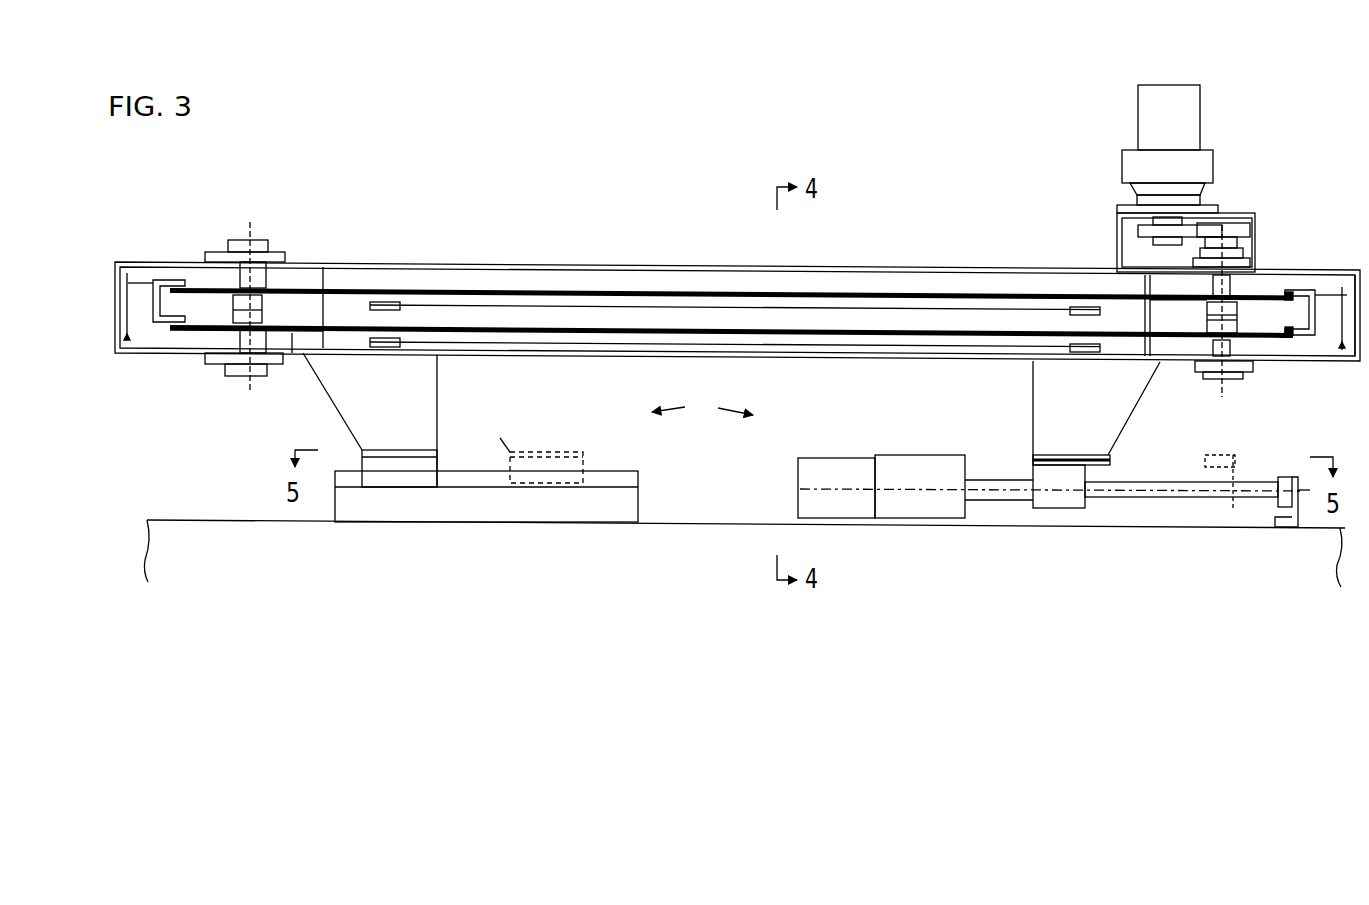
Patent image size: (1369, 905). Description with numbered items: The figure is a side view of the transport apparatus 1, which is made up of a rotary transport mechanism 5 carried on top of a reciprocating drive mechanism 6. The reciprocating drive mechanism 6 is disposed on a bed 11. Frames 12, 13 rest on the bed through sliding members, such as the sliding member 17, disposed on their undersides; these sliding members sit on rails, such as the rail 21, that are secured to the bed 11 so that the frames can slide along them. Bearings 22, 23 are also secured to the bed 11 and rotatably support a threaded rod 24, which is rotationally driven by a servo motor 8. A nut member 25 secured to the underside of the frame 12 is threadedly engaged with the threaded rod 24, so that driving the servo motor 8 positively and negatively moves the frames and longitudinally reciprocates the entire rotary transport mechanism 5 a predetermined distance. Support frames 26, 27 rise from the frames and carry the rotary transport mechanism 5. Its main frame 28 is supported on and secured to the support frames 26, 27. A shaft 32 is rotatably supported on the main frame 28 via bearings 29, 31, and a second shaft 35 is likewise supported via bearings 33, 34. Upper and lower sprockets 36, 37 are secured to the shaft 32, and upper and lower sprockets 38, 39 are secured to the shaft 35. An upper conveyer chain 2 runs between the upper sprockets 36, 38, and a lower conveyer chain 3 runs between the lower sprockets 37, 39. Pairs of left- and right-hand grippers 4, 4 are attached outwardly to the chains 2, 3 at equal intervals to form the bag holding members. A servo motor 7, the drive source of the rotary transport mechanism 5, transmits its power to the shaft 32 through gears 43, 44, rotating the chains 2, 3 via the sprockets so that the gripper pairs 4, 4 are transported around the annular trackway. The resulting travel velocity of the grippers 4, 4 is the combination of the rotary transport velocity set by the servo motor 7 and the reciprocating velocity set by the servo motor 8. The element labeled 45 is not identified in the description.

The transport apparatus 1 is at (625, 183).
The upper conveyer chain 2 is at (1293, 290).
The lower conveyer chain 3 is at (1290, 338).
The gripper 4 is at (1338, 290).
The rotary transport mechanism 5 is at (711, 251).
The reciprocating drive mechanism 6 is at (702, 408).
The servo motor 7 is at (1190, 125).
The servo motor 8 is at (840, 470).
The bed 11 is at (213, 528).
The frame 12 is at (1040, 455).
The frame 13 is at (413, 450).
The sliding member 17 is at (398, 477).
The rail 21 is at (602, 475).
The bearing 22 is at (912, 470).
The bearing 23 is at (1235, 467).
The threaded rod 24 is at (1130, 500).
The nut member 25 is at (1052, 500).
The support frame 26 is at (1033, 393).
The support frame 27 is at (425, 398).
The main frame 28 is at (810, 352).
The bearing 29 is at (1237, 257).
The bearing 31 is at (1215, 378).
The shaft 32 is at (1250, 285).
The bearing 33 is at (252, 237).
The bearing 34 is at (233, 377).
The shaft 35 is at (257, 277).
The upper sprocket 36 is at (1167, 305).
The lower sprocket 37 is at (1188, 340).
The upper sprocket 38 is at (305, 288).
The lower sprocket 39 is at (292, 337).
The gear 43 is at (1138, 230).
The gear 44 is at (1227, 228).
The stopper 45 is at (1336, 330).